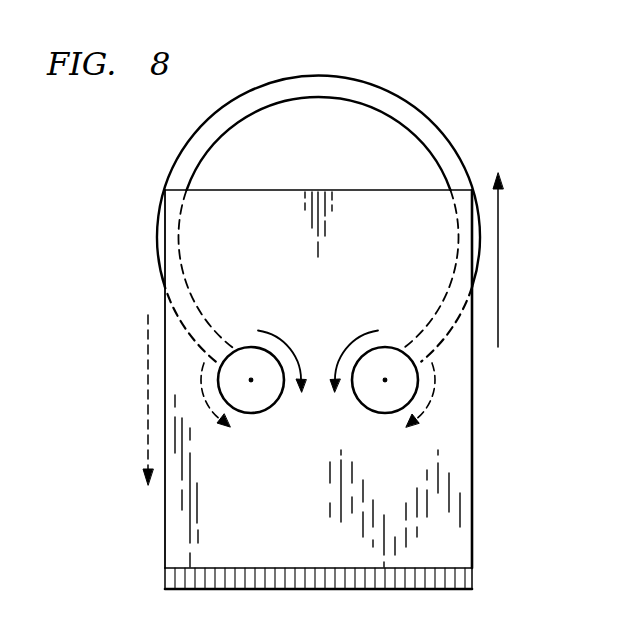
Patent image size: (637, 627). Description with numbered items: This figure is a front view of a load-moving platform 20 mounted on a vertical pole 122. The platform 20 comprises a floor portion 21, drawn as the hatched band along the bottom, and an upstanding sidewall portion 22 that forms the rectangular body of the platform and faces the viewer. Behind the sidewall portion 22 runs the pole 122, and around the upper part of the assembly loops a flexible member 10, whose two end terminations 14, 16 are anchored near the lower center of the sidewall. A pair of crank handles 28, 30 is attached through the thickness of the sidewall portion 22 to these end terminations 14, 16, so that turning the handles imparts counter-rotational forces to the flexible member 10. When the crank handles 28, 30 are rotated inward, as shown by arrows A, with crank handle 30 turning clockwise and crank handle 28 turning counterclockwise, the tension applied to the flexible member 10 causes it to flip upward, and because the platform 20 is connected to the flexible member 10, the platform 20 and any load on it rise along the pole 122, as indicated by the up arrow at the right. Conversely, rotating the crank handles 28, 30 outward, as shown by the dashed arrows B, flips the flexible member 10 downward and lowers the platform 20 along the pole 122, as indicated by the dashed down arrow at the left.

The flexible member 10 is at (423, 130).
The pole 122 is at (328, 117).
The end termination 14 is at (247, 347).
The end termination 16 is at (390, 347).
The platform 20 is at (157, 524).
The floor portion 21 is at (458, 581).
The sidewall portion 22 is at (458, 492).
The crank handle 28 is at (385, 380).
The crank handle 30 is at (251, 380).
The arrows A is at (344, 346).
The arrows B is at (148, 397).